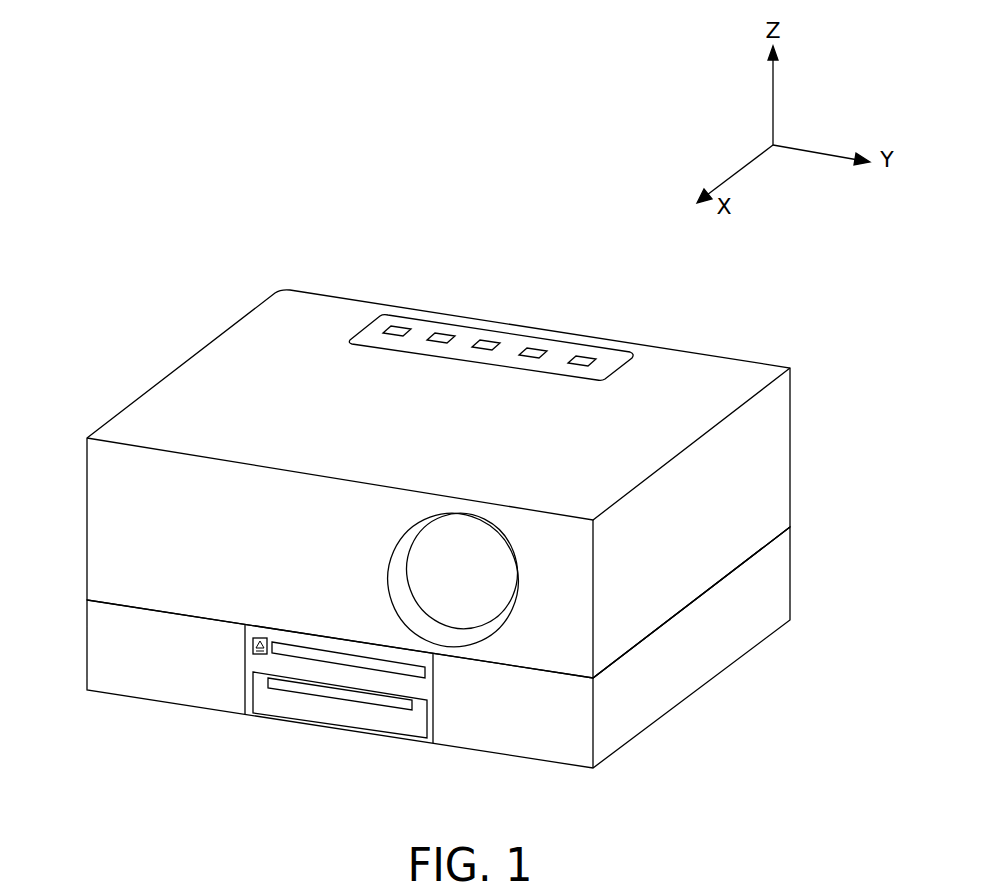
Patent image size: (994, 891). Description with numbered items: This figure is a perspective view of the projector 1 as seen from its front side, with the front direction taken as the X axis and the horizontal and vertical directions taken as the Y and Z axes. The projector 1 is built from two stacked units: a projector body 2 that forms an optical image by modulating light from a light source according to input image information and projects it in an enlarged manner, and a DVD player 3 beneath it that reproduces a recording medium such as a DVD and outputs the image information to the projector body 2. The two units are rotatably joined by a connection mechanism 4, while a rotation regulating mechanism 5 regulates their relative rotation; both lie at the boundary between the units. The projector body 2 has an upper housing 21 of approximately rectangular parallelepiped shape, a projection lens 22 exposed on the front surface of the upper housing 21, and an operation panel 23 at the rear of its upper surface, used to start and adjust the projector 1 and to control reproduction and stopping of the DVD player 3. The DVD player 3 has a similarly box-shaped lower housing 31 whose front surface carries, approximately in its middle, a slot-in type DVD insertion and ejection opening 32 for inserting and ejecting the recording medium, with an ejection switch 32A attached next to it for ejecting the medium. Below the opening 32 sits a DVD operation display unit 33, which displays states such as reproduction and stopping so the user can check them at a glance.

The projector 1 is at (492, 510).
The projector body 2 is at (492, 484).
The DVD player 3 is at (487, 647).
The connection mechanism 4 is at (741, 597).
The rotation regulating mechanism 5 is at (770, 540).
The upper housing 21 is at (772, 477).
The projection lens 22 is at (519, 580).
The operation panel 23 is at (633, 358).
The lower housing 31 is at (715, 665).
The DVD insertion and ejection opening 32 is at (327, 683).
The ejection switch 32A is at (245, 645).
The DVD operation display unit 33 is at (433, 720).